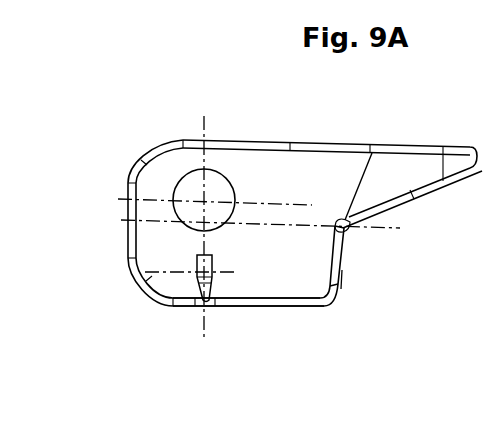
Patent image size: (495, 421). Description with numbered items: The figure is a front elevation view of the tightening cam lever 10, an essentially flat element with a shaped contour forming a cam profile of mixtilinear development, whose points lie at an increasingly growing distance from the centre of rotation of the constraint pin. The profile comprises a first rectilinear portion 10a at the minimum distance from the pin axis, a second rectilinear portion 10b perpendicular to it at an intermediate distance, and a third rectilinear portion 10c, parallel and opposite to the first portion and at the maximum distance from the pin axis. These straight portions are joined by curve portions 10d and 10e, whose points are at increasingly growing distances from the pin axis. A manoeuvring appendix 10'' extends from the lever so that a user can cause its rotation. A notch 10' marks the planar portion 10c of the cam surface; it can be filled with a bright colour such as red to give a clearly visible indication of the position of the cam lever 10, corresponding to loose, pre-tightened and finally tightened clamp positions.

The cam lever 10 is at (305, 182).
The first rectilinear portion 10a is at (218, 141).
The second rectilinear portion 10b is at (121, 208).
The third rectilinear portion 10c is at (215, 307).
The curve portion 10d is at (143, 167).
The curve portion 10e is at (142, 297).
The notch 10' is at (245, 303).
The manoeuvring appendix 10'' is at (412, 211).